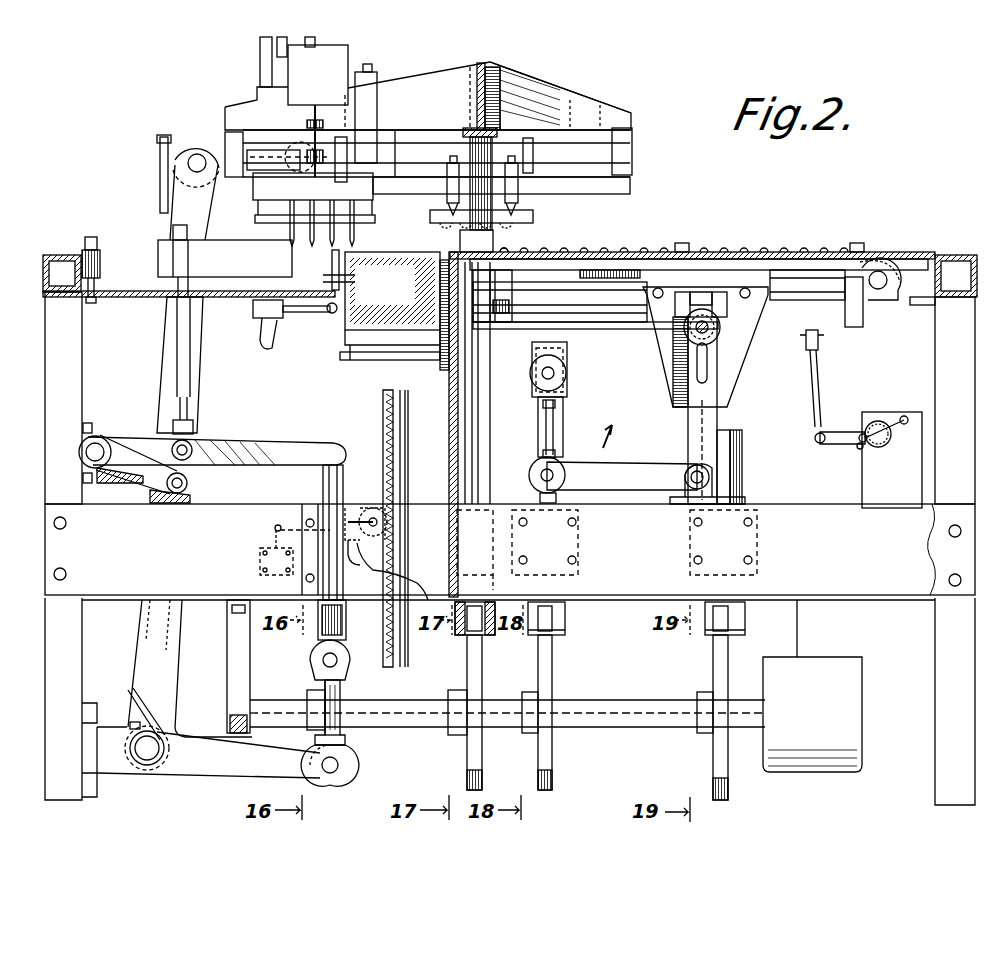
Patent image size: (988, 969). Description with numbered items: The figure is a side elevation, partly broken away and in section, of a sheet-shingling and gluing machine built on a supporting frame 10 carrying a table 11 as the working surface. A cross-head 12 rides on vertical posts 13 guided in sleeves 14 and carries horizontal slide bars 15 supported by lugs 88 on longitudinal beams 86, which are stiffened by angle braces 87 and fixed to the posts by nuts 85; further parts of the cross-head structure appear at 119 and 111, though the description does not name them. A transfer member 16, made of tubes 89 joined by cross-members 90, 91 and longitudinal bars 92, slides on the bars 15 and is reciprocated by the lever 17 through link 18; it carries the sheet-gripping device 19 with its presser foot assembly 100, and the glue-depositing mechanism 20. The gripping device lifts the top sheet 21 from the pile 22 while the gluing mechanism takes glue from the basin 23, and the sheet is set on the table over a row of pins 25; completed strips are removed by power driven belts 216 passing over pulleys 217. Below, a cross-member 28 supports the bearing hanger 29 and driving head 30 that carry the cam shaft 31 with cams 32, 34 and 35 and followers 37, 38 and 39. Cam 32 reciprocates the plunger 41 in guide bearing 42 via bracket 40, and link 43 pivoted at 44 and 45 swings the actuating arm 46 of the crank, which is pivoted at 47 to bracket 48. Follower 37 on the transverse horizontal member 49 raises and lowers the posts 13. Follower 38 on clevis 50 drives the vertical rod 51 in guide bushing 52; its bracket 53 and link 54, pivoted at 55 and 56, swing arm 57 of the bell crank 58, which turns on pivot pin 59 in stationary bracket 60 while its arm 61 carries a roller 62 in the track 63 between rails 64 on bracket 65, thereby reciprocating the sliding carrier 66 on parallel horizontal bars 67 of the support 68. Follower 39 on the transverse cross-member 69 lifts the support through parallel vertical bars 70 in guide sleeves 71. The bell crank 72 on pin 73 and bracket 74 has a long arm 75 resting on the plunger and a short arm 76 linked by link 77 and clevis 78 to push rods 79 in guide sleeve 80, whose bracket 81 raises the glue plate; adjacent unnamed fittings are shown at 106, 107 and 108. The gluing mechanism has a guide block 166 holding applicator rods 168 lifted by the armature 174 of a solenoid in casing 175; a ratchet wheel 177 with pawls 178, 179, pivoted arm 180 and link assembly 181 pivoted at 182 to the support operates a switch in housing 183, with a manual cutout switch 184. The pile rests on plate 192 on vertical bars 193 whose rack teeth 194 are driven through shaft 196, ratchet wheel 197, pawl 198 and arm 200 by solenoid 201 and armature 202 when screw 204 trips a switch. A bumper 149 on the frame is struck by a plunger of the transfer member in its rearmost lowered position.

The supporting frame 10 is at (45, 341).
The table 11 is at (900, 252).
The cross-head 12 is at (535, 90).
The vertical posts 13 is at (485, 580).
The sleeves 14 is at (475, 392).
The slide bars 15 is at (483, 197).
The transfer member 16 is at (405, 146).
The lever 17 is at (185, 191).
The link 18 is at (252, 170).
The sheet-gripping device 19 is at (542, 220).
The glue-depositing mechanism 20 is at (254, 192).
The sheet 21 is at (383, 254).
The pile 22 is at (375, 348).
The glue basin 23 is at (225, 258).
The pins 25 is at (575, 248).
The cross-member 28 is at (217, 515).
The bearing hanger 29 is at (228, 635).
The driving head 30 is at (856, 696).
The cam shaft 31 is at (620, 727).
The cam 32 is at (345, 734).
The cam 34 is at (552, 752).
The cam 35 is at (468, 752).
The cam follower 37 is at (470, 637).
The cam follower 38 is at (550, 640).
The follower roller 39 is at (718, 628).
The bracket 40 is at (345, 622).
The plunger 41 is at (330, 478).
The guide bearing 42 is at (320, 518).
The link 43 is at (340, 705).
The pivot connection 44 is at (320, 661).
The pivot connection 45 is at (338, 765).
The actuating arm 46 is at (213, 767).
The pivot connection 47 is at (148, 760).
The bracket 48 is at (114, 770).
The transverse horizontal member 49 is at (488, 638).
The clevis 50 is at (565, 625).
The vertical rod 51 is at (563, 428).
The guide bushing 52 is at (558, 496).
The bracket 53 is at (567, 355).
The link 54 is at (545, 421).
The pivot connection 55 is at (567, 373).
The pivot connection 56 is at (533, 474).
The arm 57 is at (625, 468).
The bell crank 58 is at (640, 490).
The pivot pin 59 is at (688, 475).
The stationary bracket 60 is at (712, 492).
The arm 61 is at (705, 412).
The roller 62 is at (730, 328).
The track 63 is at (700, 300).
The rails 64 is at (684, 290).
The bracket 65 is at (747, 290).
The sliding carrier 66 is at (619, 302).
The parallel horizontal bars 67 is at (815, 282).
The support 68 is at (838, 330).
The transverse cross-member 69 is at (745, 620).
The parallel vertical bars 70 is at (730, 427).
The guide sleeves 71 is at (742, 446).
The bell crank 72 is at (122, 433).
The pin 73 is at (80, 450).
The bracket 74 is at (80, 428).
The long arm 75 is at (258, 446).
The short arm 76 is at (135, 484).
The link 77 is at (188, 480).
The clevis 78 is at (196, 432).
The push rods 79 is at (185, 283).
The guide sleeve 80 is at (177, 344).
The bracket 81 is at (180, 247).
The nuts 85 is at (470, 130).
The longitudinal beams 86 is at (553, 95).
The angle braces 87 is at (605, 110).
The lugs 88 is at (232, 143).
The tubes 89 is at (415, 146).
The cross-member 90 is at (528, 176).
The cross-member 91 is at (340, 178).
The longitudinal bars 92 is at (535, 190).
The presser foot assembly 100 is at (432, 228).
The strip 106 is at (345, 265).
The ball 107 is at (333, 315).
The block 108 is at (312, 310).
The column 111 is at (465, 377).
The housing 119 is at (258, 96).
The bumper 149 is at (92, 245).
The guide block 166 is at (313, 186).
The applicator rods 168 is at (330, 228).
The armature 174 is at (306, 114).
The casing 175 is at (345, 72).
The ratchet wheel 177 is at (873, 425).
The pawl 178 is at (906, 417).
The pawl 179 is at (858, 450).
The pivoted arm 180 is at (828, 432).
The link assembly 181 is at (821, 390).
The pivot connection 182 is at (806, 345).
The housing 183 is at (880, 483).
The manual cutout switch 184 is at (262, 60).
The plate 192 is at (340, 357).
The vertical bars 193 is at (388, 408).
The rack teeth 194 is at (385, 430).
The shaft 196 is at (392, 530).
The ratchet wheel 197 is at (385, 540).
The pawl 198 is at (383, 508).
The arm 200 is at (290, 526).
The solenoid 201 is at (259, 565).
The armature 202 is at (273, 540).
The screw 204 is at (410, 252).
The power driven belts 216 is at (925, 250).
The pulleys 217 is at (882, 295).